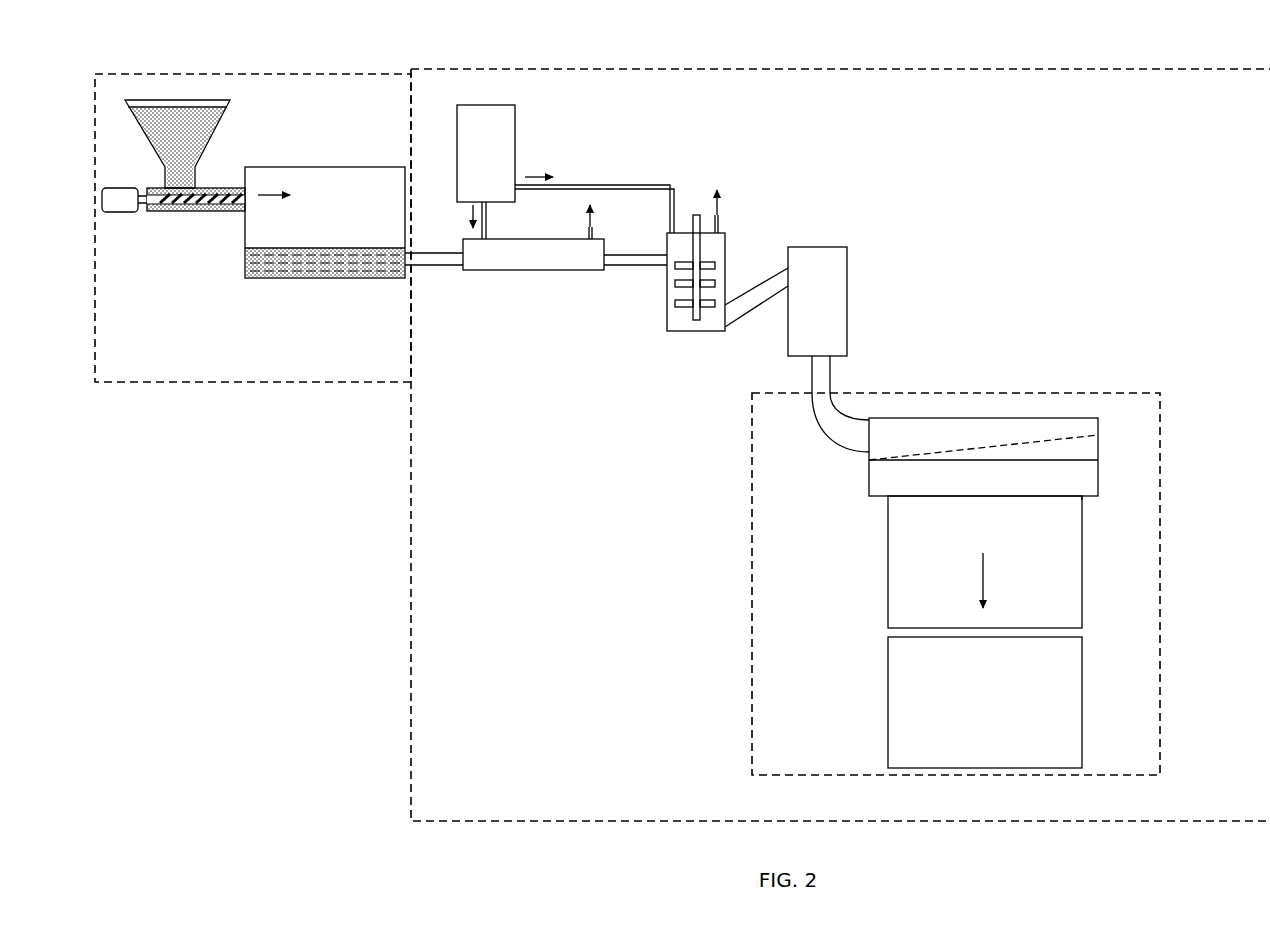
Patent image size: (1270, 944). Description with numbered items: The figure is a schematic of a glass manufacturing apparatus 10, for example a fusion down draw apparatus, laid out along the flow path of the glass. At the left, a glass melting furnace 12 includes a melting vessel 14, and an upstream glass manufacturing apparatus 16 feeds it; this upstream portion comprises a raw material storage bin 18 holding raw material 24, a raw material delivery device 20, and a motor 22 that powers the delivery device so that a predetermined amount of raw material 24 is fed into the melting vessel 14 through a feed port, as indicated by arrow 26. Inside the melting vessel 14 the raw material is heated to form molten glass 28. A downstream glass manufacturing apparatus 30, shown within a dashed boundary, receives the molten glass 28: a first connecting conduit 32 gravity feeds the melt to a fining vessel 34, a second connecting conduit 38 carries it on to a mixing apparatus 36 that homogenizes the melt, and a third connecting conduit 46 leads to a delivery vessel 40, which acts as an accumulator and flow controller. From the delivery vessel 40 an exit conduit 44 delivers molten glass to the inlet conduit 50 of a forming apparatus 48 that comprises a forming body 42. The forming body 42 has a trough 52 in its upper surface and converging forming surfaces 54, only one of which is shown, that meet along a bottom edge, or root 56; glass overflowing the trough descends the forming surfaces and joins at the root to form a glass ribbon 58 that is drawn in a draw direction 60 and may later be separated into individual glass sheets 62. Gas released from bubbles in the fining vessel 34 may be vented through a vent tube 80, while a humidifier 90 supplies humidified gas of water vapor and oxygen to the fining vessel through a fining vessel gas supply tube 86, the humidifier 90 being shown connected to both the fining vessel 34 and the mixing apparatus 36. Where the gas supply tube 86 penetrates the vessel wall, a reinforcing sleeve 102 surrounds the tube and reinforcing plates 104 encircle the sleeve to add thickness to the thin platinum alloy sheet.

The glass manufacturing apparatus 10 is at (333, 445).
The glass melting furnace 12 is at (258, 383).
The melting vessel 14 is at (290, 167).
The upstream glass manufacturing apparatus 16 is at (150, 233).
The raw material storage bin 18 is at (215, 123).
The raw material delivery device 20 is at (215, 212).
The motor 22 is at (115, 188).
The raw material 24 is at (185, 136).
The arrow 26 is at (272, 192).
The molten glass 28 is at (275, 265).
The downstream glass manufacturing apparatus 30 is at (693, 69).
The first connecting conduit 32 is at (442, 268).
The fining vessel 34 is at (522, 270).
The mixing apparatus 36 is at (668, 315).
The second connecting conduit 38 is at (633, 268).
The delivery vessel 40 is at (788, 332).
The forming body 42 is at (1100, 455).
The exit conduit 44 is at (832, 370).
The third connecting conduit 46 is at (747, 310).
The forming apparatus 48 is at (995, 393).
The inlet conduit 50 is at (827, 443).
The trough 52 is at (1035, 435).
The converging forming surfaces 54 is at (880, 480).
The root 56 is at (1070, 497).
The glass ribbon 58 is at (888, 553).
The draw direction 60 is at (980, 590).
The glass sheets 62 is at (888, 725).
The vent tube 80 is at (595, 232).
The fining vessel gas supply tube 86 is at (490, 225).
The humidifier 90 is at (516, 140).
The reinforcing sleeve 102 is at (648, 183).
The reinforcing plates 104 is at (720, 222).